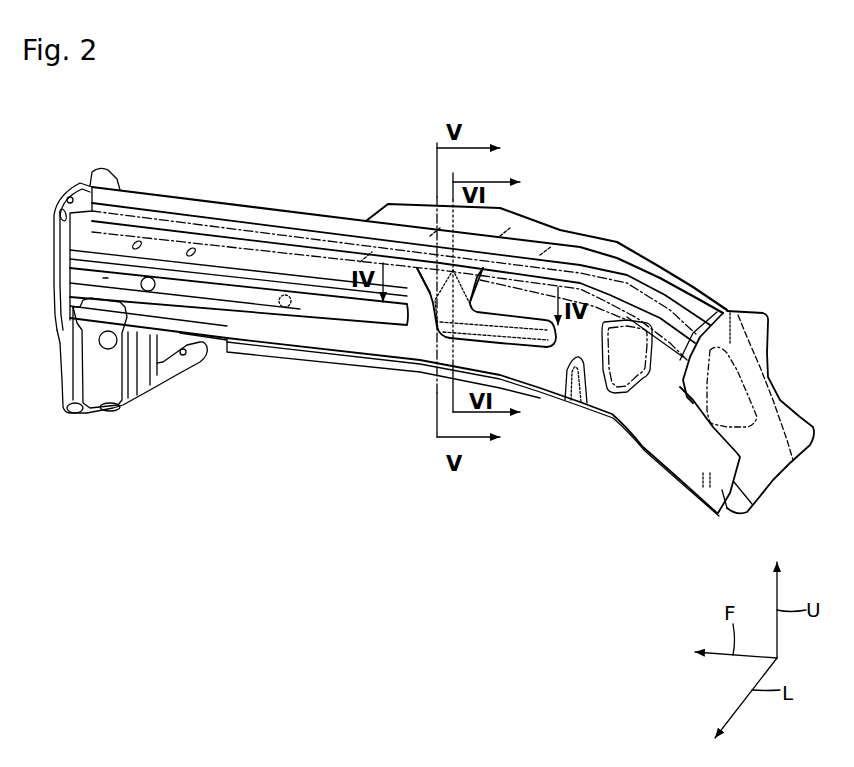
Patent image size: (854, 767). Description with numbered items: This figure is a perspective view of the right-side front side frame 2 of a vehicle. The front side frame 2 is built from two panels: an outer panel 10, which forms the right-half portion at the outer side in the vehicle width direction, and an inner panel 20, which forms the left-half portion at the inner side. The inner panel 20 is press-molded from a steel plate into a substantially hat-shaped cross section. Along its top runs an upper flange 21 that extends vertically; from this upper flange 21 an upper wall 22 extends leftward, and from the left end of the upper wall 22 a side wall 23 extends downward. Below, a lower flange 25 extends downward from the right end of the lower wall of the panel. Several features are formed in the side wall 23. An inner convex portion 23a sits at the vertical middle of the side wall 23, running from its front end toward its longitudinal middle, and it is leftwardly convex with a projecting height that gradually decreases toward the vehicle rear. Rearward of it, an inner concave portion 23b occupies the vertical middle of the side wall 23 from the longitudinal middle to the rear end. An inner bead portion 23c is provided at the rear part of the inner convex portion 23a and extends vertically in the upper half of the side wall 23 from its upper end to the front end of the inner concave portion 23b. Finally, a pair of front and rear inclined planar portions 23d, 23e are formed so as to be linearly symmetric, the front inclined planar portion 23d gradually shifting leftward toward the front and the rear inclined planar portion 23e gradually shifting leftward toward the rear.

The front side frame 2 is at (643, 168).
The outer panel 10 is at (748, 310).
The inner panel 20 is at (688, 467).
The upper flange 21 is at (120, 190).
The upper wall 22 is at (212, 230).
The side wall 23 is at (310, 347).
The inner convex portion 23a is at (157, 270).
The inner concave portion 23b is at (537, 352).
The inner bead portion 23c is at (434, 305).
The front inclined planar portion 23d is at (433, 277).
The rear inclined planar portion 23e is at (472, 280).
The lower flange 25 is at (233, 343).